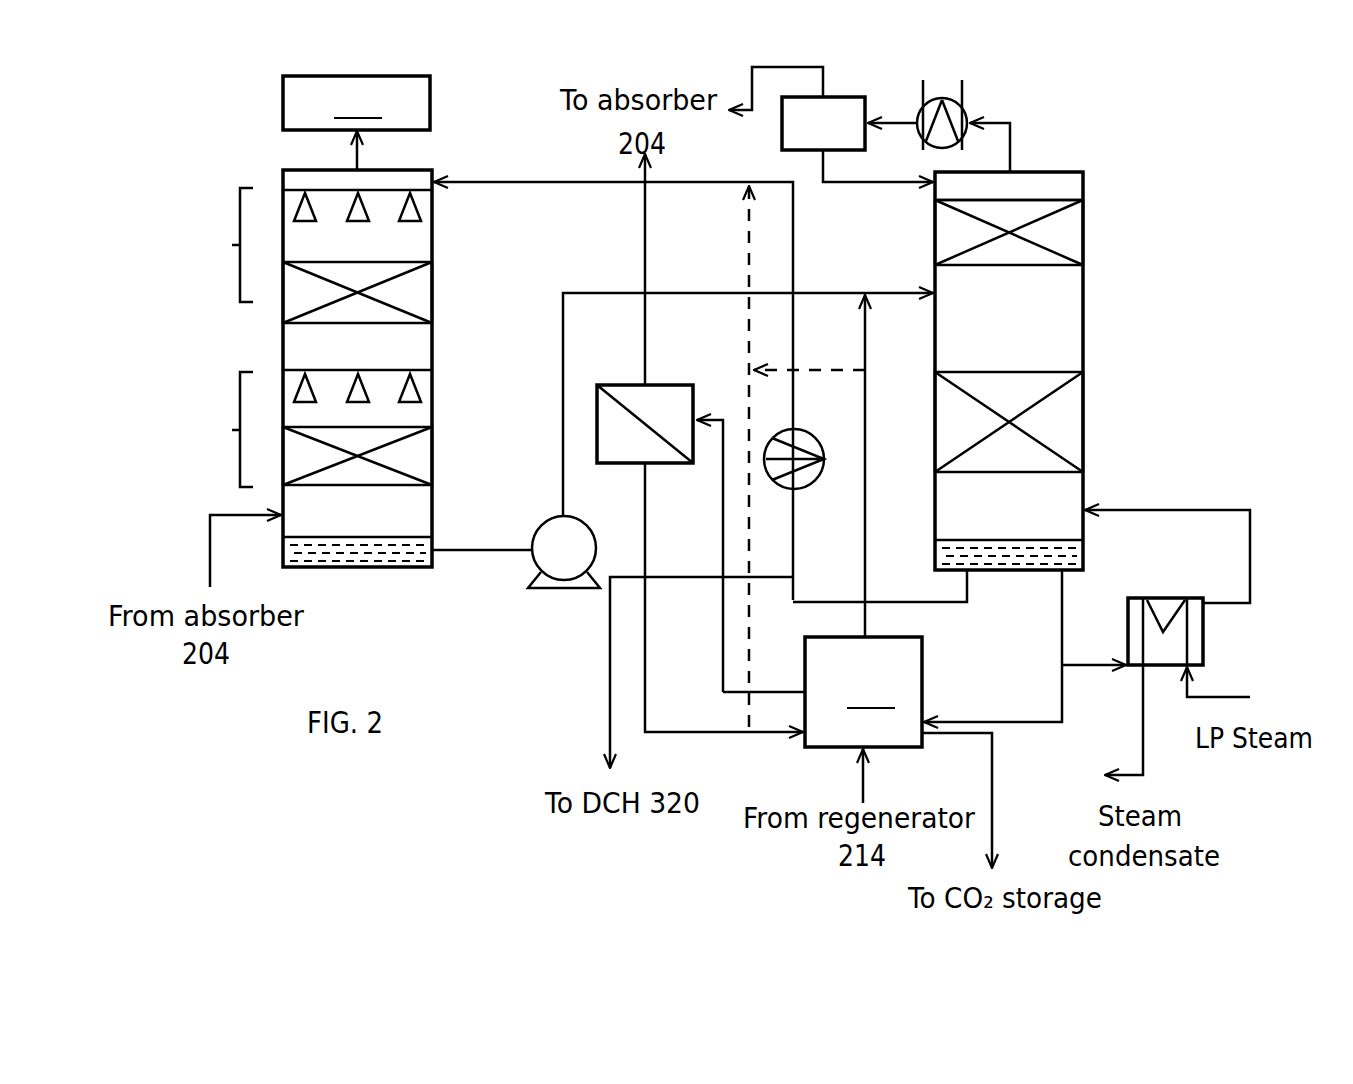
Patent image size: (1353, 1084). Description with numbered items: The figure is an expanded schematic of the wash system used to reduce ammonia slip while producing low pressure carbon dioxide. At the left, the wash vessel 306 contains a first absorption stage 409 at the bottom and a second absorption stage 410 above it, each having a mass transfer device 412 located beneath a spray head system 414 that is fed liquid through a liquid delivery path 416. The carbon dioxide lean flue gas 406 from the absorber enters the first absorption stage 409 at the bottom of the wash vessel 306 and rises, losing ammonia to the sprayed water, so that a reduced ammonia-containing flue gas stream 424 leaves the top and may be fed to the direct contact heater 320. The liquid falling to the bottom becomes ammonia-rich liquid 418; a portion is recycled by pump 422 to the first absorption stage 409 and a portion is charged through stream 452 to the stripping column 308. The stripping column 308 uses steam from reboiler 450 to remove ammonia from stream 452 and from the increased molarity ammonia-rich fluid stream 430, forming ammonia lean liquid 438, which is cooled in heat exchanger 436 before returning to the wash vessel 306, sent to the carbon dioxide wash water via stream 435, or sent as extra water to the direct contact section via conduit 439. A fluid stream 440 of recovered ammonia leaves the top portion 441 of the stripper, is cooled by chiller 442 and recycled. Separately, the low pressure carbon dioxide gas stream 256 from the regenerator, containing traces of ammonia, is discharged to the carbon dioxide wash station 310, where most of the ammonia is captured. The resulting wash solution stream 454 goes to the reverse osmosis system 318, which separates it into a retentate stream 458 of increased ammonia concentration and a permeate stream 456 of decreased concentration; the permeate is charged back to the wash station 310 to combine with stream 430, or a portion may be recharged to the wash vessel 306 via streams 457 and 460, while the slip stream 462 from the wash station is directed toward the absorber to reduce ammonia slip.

The wash vessel 306 is at (256, 170).
The ammonia stripper column 308 is at (1106, 238).
The carbon dioxide wash station 310 is at (898, 581).
The reverse osmosis system 318 is at (655, 387).
The direct contact heater 320 is at (356, 103).
The carbon dioxide lean flue gas 406 is at (208, 538).
The first absorption stage 409 is at (216, 429).
The second absorption stage 410 is at (216, 245).
The mass transfer device 412 is at (415, 291).
The spray head system 414 is at (427, 212).
The liquid delivery path 416 is at (565, 188).
The ammonia-rich liquid 418 is at (360, 553).
The pump 422 is at (538, 550).
The reduced ammonia-containing flue gas stream 424 is at (360, 158).
The increased molarity ammonia-rich fluid stream 430 is at (865, 602).
The clean water stream 435 is at (1058, 606).
The heat exchanger 436 is at (800, 430).
The ammonia lean liquid 438 is at (960, 545).
The conduit 439 is at (607, 634).
The fluid stream 440 is at (1012, 142).
The top portion 441 is at (1085, 176).
The chiller 442 is at (966, 108).
The reboiler 450 is at (1153, 598).
The stream 452 is at (815, 290).
The wash solution stream 454 is at (720, 473).
The permeate stream 456 is at (643, 473).
The stream 457 is at (748, 248).
The retentate stream 458 is at (648, 213).
The stream 460 is at (665, 180).
The slip stream 462 is at (800, 362).
The carbon dioxide gas stream 256 is at (856, 769).